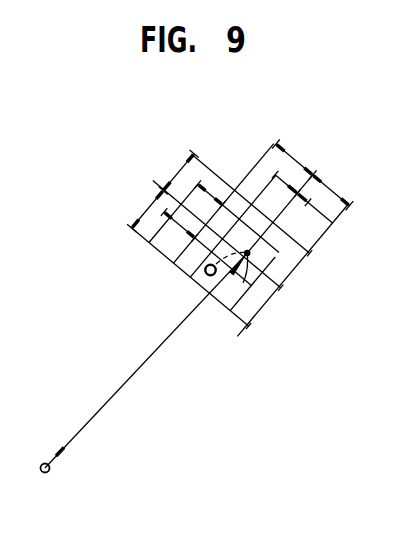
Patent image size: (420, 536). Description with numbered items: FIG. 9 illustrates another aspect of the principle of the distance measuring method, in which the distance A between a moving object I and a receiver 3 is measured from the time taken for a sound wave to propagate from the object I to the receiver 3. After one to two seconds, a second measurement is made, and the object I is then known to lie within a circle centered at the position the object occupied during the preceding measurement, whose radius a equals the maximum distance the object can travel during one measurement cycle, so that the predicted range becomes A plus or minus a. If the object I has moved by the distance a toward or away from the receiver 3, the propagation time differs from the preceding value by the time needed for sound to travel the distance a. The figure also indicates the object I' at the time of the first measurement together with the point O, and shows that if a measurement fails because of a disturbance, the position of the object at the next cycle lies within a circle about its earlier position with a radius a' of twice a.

The receiver 3 is at (50, 468).
The distance between the moving object and the receiver A is at (148, 359).
The lattice center point O is at (226, 263).
The moving object I is at (190, 290).
The object at first measurement I' is at (230, 293).
The radius of maximum travel a is at (247, 203).
The lattice spacing a prime a' is at (240, 183).